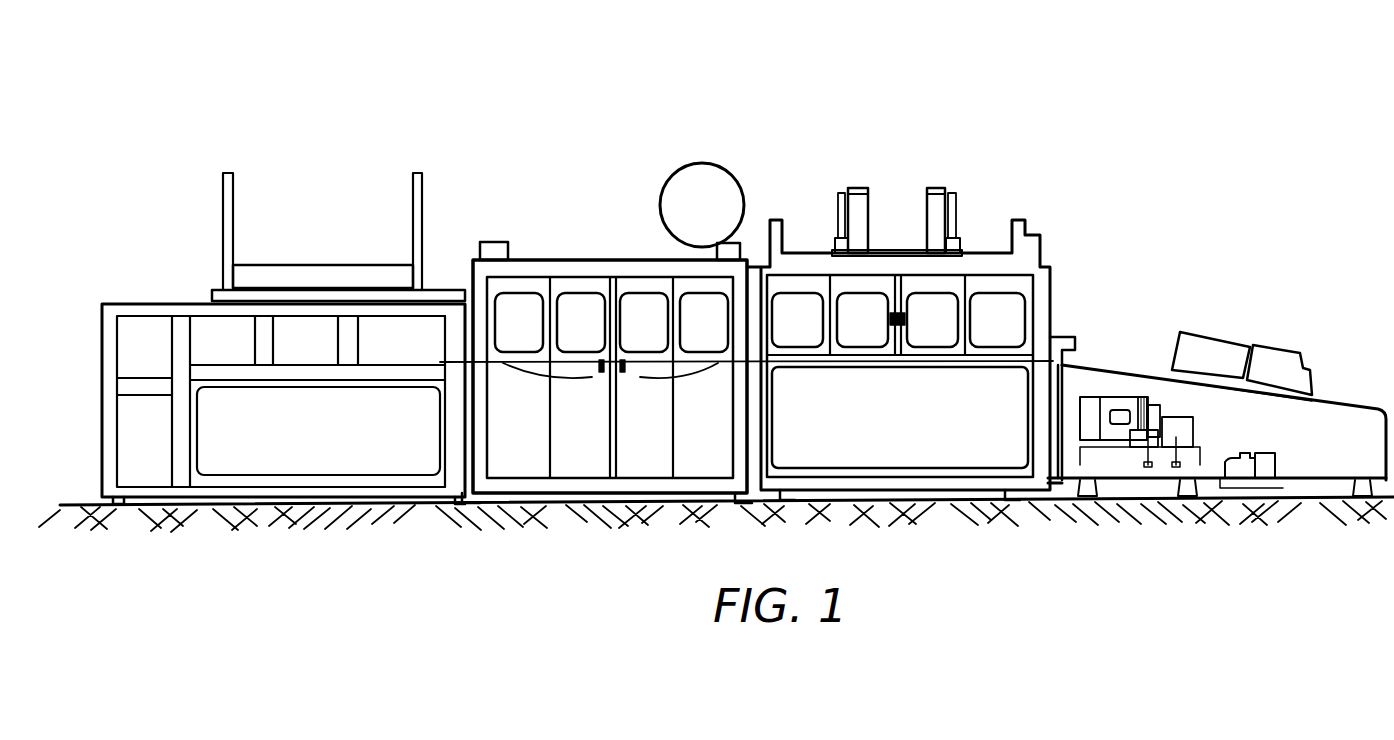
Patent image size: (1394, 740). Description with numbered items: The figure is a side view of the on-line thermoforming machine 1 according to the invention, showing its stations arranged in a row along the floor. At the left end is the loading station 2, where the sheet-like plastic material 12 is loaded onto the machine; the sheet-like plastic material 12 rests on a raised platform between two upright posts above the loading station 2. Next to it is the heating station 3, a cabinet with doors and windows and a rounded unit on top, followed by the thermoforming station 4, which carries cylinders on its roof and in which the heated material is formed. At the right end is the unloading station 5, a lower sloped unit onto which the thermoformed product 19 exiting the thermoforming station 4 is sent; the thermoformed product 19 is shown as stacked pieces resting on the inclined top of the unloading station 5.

The on-line thermoforming machine 1 is at (1086, 97).
The loading station 2 is at (187, 306).
The heating station 3 is at (650, 285).
The thermoforming station 4 is at (925, 285).
The unloading station 5 is at (1348, 405).
The sheet-like plastic material 12 is at (360, 273).
The thermoformed product 19 is at (1270, 350).